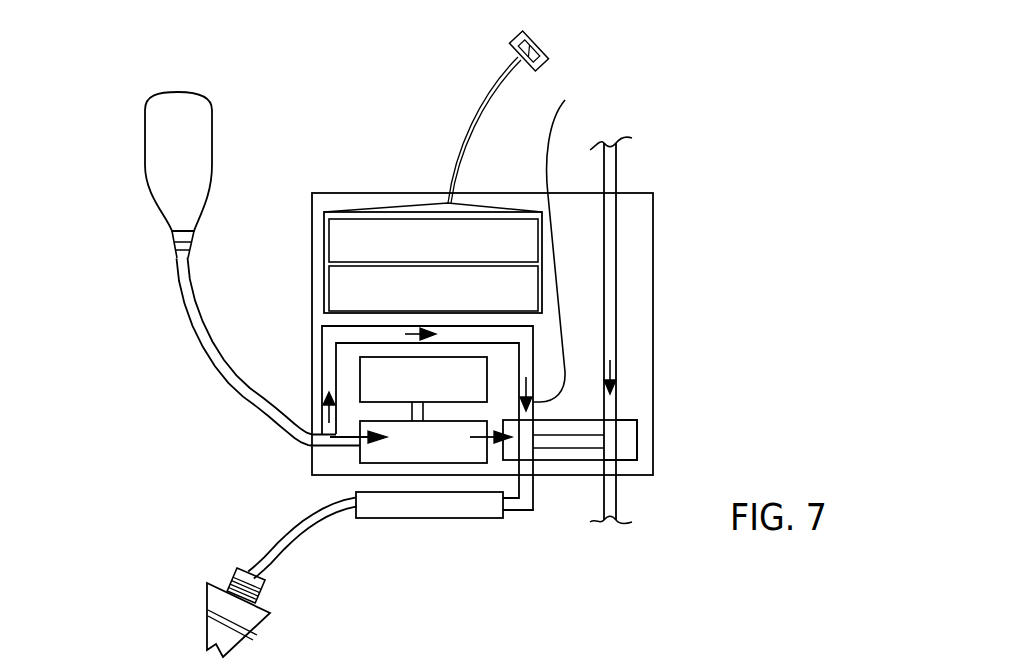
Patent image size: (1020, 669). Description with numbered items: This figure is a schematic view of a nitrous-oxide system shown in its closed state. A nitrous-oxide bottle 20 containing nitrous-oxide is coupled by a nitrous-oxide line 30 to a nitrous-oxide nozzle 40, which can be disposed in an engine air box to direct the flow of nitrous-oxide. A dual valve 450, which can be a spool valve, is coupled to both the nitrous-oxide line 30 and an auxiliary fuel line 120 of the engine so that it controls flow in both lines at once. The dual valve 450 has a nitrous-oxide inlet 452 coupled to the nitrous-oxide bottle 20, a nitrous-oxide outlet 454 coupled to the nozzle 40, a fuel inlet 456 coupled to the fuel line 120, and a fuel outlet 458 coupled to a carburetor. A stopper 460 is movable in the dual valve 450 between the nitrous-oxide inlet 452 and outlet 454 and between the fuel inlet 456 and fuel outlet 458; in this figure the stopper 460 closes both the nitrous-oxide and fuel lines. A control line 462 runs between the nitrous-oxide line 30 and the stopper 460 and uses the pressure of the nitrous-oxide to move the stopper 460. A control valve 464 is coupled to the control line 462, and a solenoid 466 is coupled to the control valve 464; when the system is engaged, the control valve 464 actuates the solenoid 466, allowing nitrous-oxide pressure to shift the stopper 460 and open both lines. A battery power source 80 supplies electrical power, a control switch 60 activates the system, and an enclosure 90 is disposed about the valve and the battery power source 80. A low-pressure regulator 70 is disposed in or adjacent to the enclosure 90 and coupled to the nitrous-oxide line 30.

The nitrous-oxide bottle 20 is at (205, 132).
The nitrous-oxide line 30 is at (180, 287).
The nitrous-oxide nozzle 40 is at (207, 604).
The control switch 60 is at (540, 45).
The low-pressure regulator 70 is at (420, 518).
The battery power source 80 is at (347, 240).
The enclosure 90 is at (653, 253).
The fuel line 120 is at (620, 162).
The dual valve 450 is at (557, 465).
The nitrous-oxide inlet 452 is at (571, 245).
The nitrous-oxide outlet 454 is at (528, 467).
The fuel inlet 456 is at (618, 410).
The fuel outlet 458 is at (613, 467).
The stopper 460 is at (617, 433).
The control line 462 is at (352, 447).
The control valve 464 is at (435, 463).
The solenoid 466 is at (368, 370).